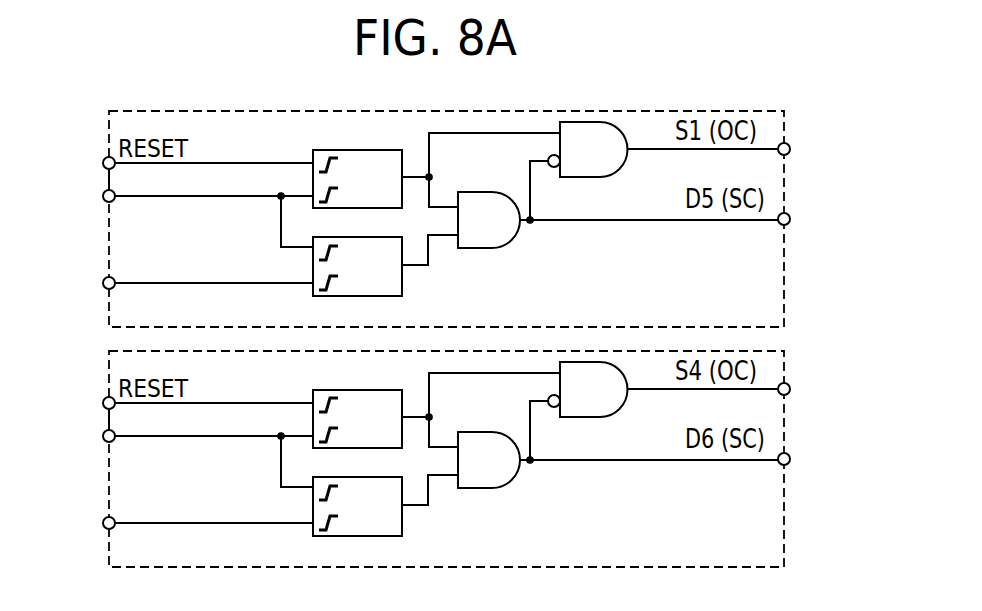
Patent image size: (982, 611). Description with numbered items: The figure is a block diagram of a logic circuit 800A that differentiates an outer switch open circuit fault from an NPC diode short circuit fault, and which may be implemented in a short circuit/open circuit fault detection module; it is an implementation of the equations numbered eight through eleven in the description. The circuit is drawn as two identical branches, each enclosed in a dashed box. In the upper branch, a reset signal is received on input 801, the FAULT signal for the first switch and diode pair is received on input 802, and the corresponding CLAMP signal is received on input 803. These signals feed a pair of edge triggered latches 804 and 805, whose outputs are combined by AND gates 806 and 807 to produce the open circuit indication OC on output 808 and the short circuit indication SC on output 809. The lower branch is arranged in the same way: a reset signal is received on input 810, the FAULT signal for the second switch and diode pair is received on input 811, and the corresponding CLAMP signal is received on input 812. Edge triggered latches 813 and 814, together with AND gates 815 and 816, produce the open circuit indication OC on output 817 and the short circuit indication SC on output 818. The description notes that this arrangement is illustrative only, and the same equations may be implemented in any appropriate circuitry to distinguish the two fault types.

The logic circuit 800A is at (180, 95).
The input 801 is at (103, 159).
The input 802 is at (103, 195).
The input 803 is at (103, 281).
The edge triggered latch 804 is at (337, 150).
The edge triggered latch 805 is at (403, 284).
The AND gate 806 is at (514, 236).
The AND gate 807 is at (567, 178).
The output 808 is at (790, 146).
The output 809 is at (790, 218).
The input 810 is at (172, 384).
The input 811 is at (172, 448).
The input 812 is at (172, 511).
The edge triggered latch 813 is at (357, 403).
The edge triggered latch 814 is at (391, 508).
The AND gate 815 is at (518, 469).
The AND gate 816 is at (599, 406).
The output 817 is at (819, 373).
The output 818 is at (819, 451).